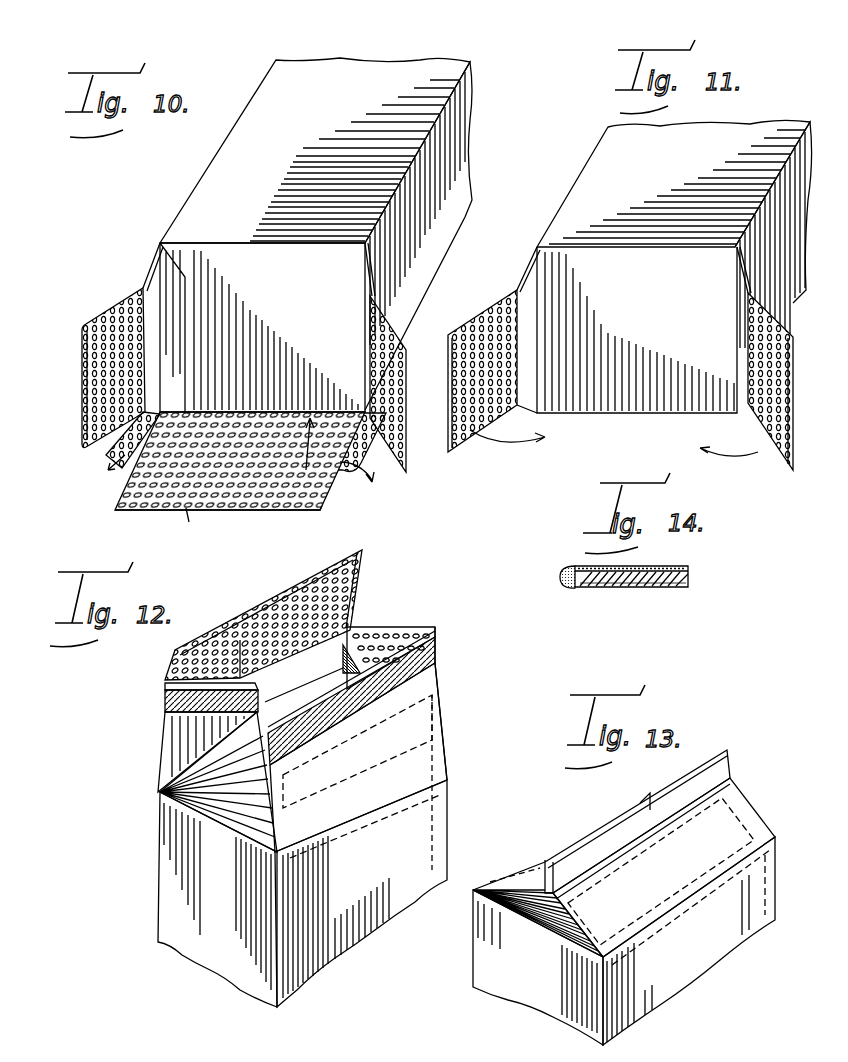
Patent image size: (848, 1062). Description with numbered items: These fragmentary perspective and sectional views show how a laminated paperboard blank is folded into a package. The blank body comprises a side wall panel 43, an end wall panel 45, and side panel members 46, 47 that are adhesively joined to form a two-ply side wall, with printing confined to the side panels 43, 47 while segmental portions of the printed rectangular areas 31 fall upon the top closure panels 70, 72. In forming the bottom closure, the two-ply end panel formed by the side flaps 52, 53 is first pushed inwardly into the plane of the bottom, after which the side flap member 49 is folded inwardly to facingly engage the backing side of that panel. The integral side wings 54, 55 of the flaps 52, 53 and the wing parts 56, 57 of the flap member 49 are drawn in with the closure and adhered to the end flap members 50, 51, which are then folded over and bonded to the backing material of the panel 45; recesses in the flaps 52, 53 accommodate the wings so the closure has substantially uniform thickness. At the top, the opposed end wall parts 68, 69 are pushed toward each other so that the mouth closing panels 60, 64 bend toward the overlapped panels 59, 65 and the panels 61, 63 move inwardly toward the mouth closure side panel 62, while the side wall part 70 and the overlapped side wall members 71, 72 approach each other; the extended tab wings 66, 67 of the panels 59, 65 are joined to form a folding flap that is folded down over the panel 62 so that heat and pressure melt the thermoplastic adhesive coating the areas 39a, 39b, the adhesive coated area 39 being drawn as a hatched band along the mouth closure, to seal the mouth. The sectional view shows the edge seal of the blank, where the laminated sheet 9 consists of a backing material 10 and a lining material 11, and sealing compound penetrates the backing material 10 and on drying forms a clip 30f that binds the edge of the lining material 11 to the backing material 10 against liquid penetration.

In FIG. 14, the laminated sheet material 9 is at (690, 576).
In FIG. 14, the backing material 10 is at (664, 588).
In FIG. 14, the lining material 11 is at (658, 568).
In FIG. 14, the clip 30f is at (566, 570).
In FIG. 12, the rectangular areas 31 is at (430, 712).
In FIG. 13, the rectangular areas 31 is at (730, 818).
In FIG. 12, the hinge strip 39 is at (165, 702).
In FIG. 12, the thermoplastic adhesive coated area 39a is at (382, 625).
In FIG. 12, the thermoplastic adhesive coated area 39b is at (440, 652).
In FIG. 12, the side wall panel 43 is at (420, 800).
In FIG. 13, the side wall panel 43 is at (762, 897).
In FIG. 10, the end wall panel 45 is at (448, 190).
In FIG. 11, the end wall panel 45 is at (773, 235).
In FIG. 12, the end wall panel 45 is at (180, 850).
In FIG. 13, the end wall panel 45 is at (480, 950).
In FIG. 12, the side panel member 46 is at (315, 697).
In FIG. 10, the side panel member 47 is at (318, 166).
In FIG. 11, the side panel member 47 is at (696, 184).
In FIG. 10, the side flap member 49 is at (200, 545).
In FIG. 11, the side flap member 49 is at (642, 344).
In FIG. 10, the end flap member 50 is at (82, 392).
In FIG. 10, the end flap member 51 is at (406, 452).
In FIG. 10, the side flap 52 is at (178, 308).
In FIG. 10, the side flap 53 is at (282, 344).
In FIG. 10, the side wing 54 is at (150, 273).
In FIG. 11, the side wing 54 is at (527, 273).
In FIG. 10, the side wing 55 is at (376, 320).
In FIG. 11, the side wing 55 is at (745, 290).
In FIG. 10, the wing part 56 is at (110, 453).
In FIG. 11, the wing part 56 is at (496, 371).
In FIG. 10, the wing part 57 is at (349, 470).
In FIG. 11, the wing part 57 is at (746, 381).
In FIG. 12, the mouth closing panel 59 is at (352, 584).
In FIG. 12, the mouth closing panel 60 is at (348, 660).
In FIG. 12, the mouth closing panel 61 is at (420, 628).
In FIG. 12, the mouth closing panel 62 is at (405, 700).
In FIG. 12, the mouth closing panel 63 is at (243, 722).
In FIG. 12, the mouth closing panel 64 is at (170, 686).
In FIG. 12, the mouth closing panel 65 is at (173, 668).
In FIG. 12, the tab wing 66 is at (313, 583).
In FIG. 13, the tab wing 66 is at (715, 773).
In FIG. 12, the tab wing 67 is at (220, 626).
In FIG. 13, the tab wing 67 is at (606, 838).
In FIG. 12, the end wall part 68 is at (392, 628).
In FIG. 12, the end wall part 69 is at (208, 742).
In FIG. 13, the end wall part 69 is at (548, 908).
In FIG. 12, the side wall part 70 is at (440, 752).
In FIG. 13, the side wall part 70 is at (760, 828).
In FIG. 12, the side wall member 71 is at (305, 684).
In FIG. 13, the side wall member 72 is at (522, 880).